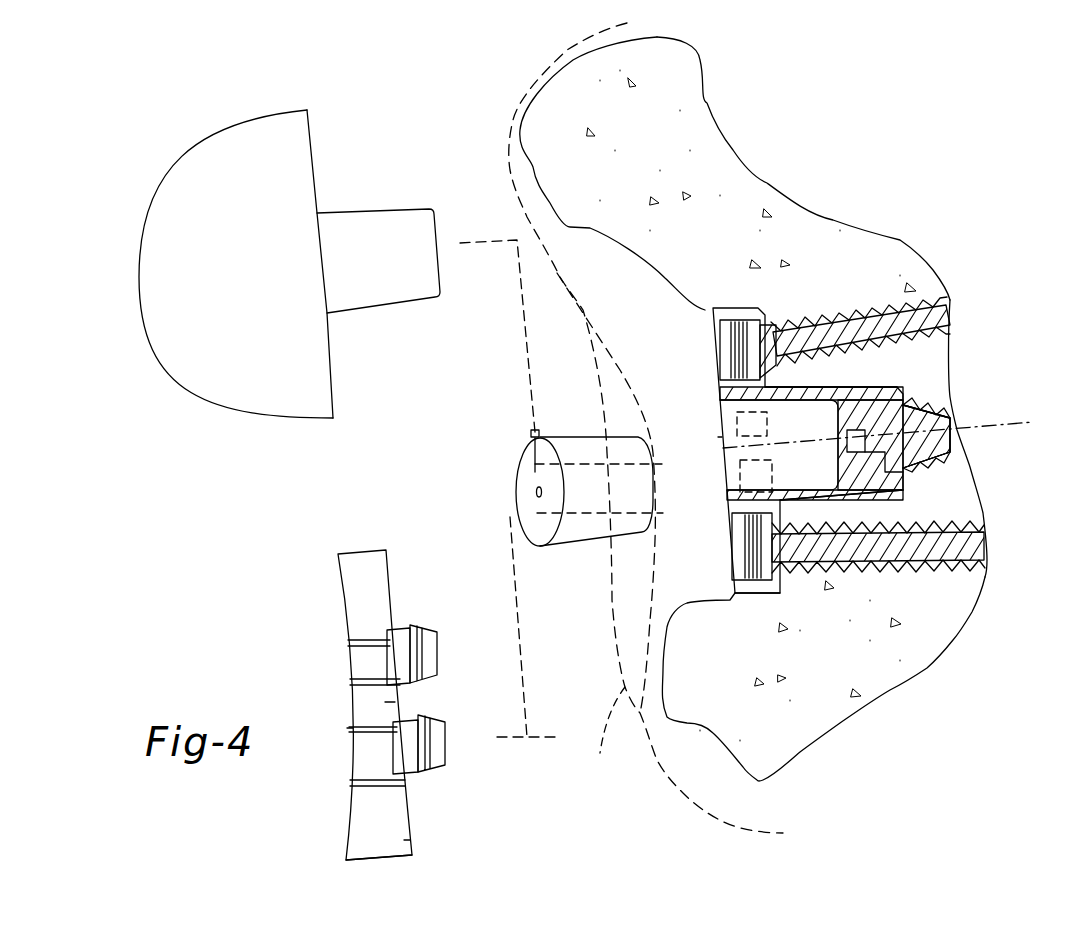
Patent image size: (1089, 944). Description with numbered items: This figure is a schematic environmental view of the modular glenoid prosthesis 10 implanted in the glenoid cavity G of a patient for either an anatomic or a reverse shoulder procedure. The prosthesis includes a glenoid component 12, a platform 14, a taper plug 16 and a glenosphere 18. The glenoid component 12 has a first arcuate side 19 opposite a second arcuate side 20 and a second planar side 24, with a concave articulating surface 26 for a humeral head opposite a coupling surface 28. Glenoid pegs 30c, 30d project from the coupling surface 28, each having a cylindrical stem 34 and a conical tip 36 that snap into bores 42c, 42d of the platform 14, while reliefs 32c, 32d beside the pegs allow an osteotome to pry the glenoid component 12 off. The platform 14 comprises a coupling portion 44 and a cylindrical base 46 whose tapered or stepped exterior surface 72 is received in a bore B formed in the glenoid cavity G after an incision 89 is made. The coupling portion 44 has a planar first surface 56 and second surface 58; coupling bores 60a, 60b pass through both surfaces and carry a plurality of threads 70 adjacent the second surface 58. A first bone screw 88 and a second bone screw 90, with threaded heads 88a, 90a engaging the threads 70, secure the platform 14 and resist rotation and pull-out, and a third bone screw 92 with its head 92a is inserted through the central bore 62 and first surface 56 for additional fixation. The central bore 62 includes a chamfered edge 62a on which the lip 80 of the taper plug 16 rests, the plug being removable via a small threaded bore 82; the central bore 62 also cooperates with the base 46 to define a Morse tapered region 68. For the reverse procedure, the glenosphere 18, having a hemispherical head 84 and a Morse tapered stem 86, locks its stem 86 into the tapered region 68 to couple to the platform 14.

The modular glenoid prosthesis 10 is at (653, 448).
The glenoid component 12 is at (400, 682).
The platform 14 is at (748, 428).
The taper plug 16 is at (564, 511).
The glenosphere 18 is at (273, 247).
The first arcuate side 19 is at (348, 589).
The second arcuate side 20 is at (377, 860).
The second planar side 24 is at (387, 702).
The articulating surface 26 is at (352, 729).
The coupling surface 28 is at (414, 838).
The glenoid peg 30c is at (418, 772).
The glenoid peg 30d is at (412, 625).
The relief 32c is at (397, 726).
The relief 32d is at (390, 650).
The stem 34 is at (405, 678).
The conical tip 36 is at (433, 680).
The bore 42c is at (700, 648).
The bore 42d is at (718, 437).
The coupling portion 44 is at (784, 598).
The base 46 is at (899, 494).
The first surface 56 is at (787, 450).
The second surface 58 is at (783, 582).
The coupling bore 60a is at (655, 587).
The coupling bore 60b is at (698, 309).
The central bore 62 is at (751, 423).
The chamfered edge 62a is at (740, 418).
The tapered region 68 is at (795, 492).
The plurality of threads 70 is at (782, 319).
The exterior surface 72 is at (850, 378).
The lip 80 is at (532, 436).
The threaded bore 82 is at (536, 493).
The head 84 is at (176, 191).
The tapered stem 86 is at (365, 211).
The first bone screw 88 is at (776, 309).
The threaded head 88a is at (753, 309).
The incision 89 is at (606, 735).
The second bone screw 90 is at (787, 587).
The threaded head 90a is at (730, 586).
The third bone screw 92 is at (946, 461).
The head 92a is at (883, 407).
The glenoid cavity G is at (703, 308).
The bore B is at (904, 358).